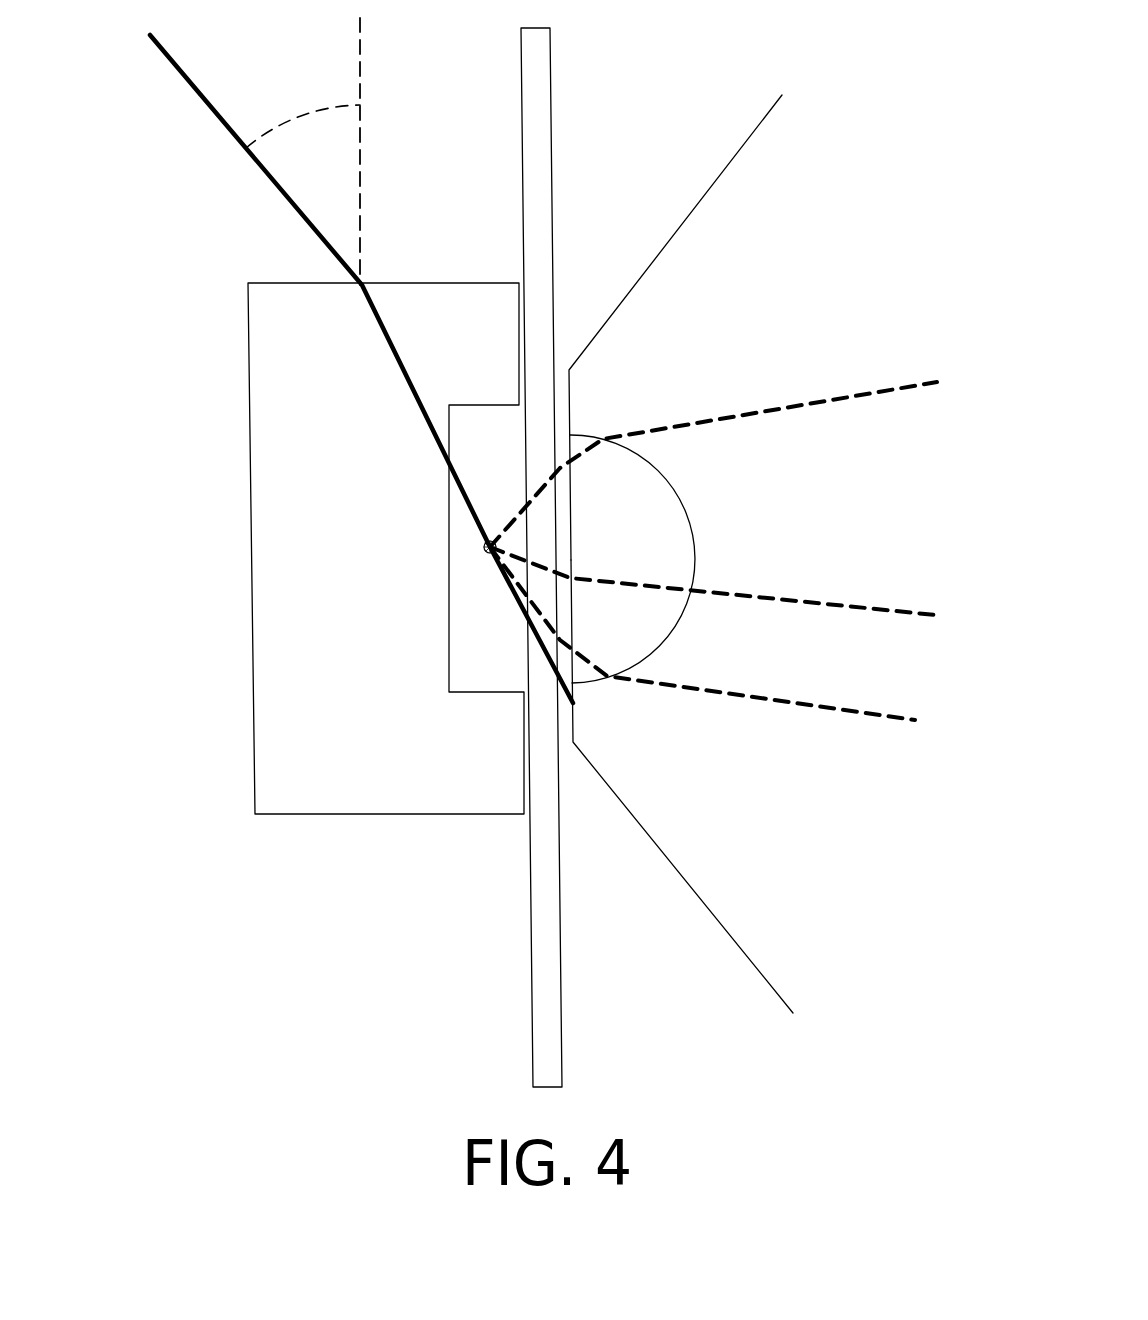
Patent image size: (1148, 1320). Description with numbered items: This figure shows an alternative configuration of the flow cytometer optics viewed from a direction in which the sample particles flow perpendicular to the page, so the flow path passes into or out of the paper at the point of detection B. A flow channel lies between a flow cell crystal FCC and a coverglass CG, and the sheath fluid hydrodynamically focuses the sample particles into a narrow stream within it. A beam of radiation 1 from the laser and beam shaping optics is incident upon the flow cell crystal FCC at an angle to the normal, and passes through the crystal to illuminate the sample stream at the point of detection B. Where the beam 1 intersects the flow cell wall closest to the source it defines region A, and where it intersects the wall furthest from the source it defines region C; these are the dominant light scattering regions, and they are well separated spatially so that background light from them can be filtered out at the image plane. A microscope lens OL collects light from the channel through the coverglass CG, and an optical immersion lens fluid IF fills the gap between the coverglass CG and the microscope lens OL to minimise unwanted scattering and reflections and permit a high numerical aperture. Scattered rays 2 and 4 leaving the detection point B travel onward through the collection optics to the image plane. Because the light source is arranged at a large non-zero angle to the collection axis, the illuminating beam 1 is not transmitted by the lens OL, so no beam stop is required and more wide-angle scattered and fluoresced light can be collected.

The beam of radiation 1 is at (178, 85).
The scattered ray 2 is at (880, 720).
The scattered ray 4 is at (835, 385).
The region A is at (437, 471).
The point of detection B is at (481, 550).
The region C is at (518, 620).
The flow cell crystal FCC is at (372, 782).
The coverglass CG is at (538, 937).
The optical immersion lens fluid IF is at (570, 323).
The microscope lens OL is at (738, 967).